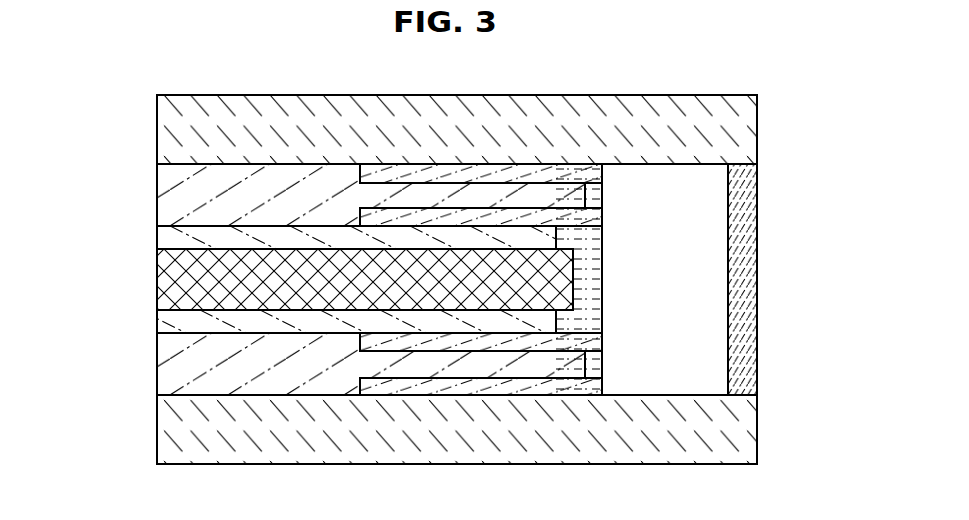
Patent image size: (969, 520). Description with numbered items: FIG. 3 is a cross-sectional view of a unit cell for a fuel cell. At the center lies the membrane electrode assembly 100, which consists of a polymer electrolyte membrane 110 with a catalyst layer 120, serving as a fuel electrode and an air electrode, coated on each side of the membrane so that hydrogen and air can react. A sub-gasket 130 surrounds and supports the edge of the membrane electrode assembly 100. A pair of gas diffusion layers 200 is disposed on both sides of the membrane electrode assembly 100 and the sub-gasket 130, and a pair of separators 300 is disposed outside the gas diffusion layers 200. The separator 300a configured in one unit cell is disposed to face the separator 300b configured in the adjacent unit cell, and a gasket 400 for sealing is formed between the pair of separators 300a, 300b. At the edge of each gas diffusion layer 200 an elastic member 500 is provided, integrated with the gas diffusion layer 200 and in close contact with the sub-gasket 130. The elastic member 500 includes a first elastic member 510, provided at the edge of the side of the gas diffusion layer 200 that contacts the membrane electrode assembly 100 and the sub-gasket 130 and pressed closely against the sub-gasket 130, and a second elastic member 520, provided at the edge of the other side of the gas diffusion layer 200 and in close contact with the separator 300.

The membrane electrode assembly 100 is at (293, 279).
The polymer electrolyte membrane 110 is at (173, 283).
The catalyst layer 120 is at (173, 239).
The sub-gasket 130 is at (602, 276).
The gas diffusion layer 200 is at (172, 201).
The separator 300 is at (435, 307).
The separator 300a is at (160, 133).
The separator 300b is at (172, 431).
The gasket 400 is at (745, 237).
The elastic member 500 is at (622, 279).
The first elastic member 510 is at (602, 212).
The second elastic member 520 is at (602, 180).